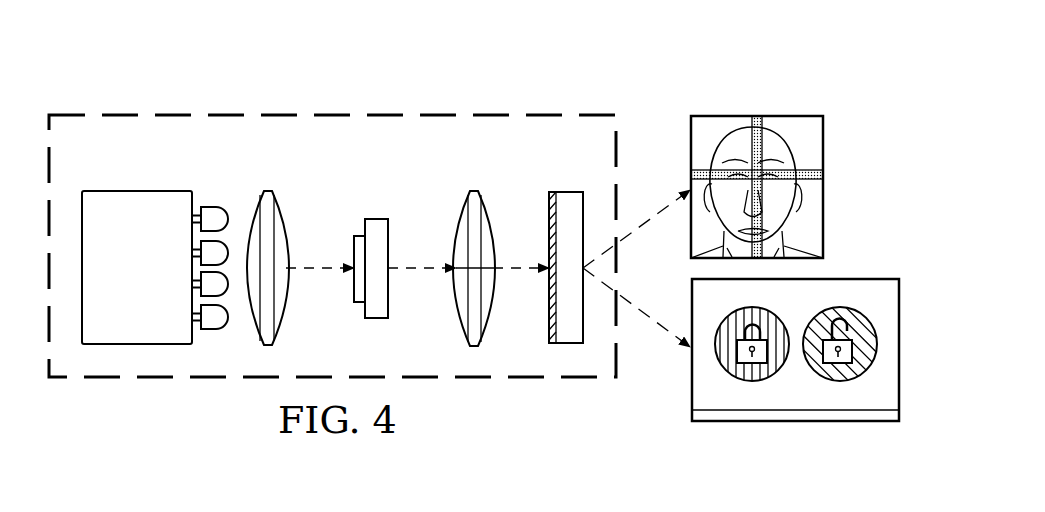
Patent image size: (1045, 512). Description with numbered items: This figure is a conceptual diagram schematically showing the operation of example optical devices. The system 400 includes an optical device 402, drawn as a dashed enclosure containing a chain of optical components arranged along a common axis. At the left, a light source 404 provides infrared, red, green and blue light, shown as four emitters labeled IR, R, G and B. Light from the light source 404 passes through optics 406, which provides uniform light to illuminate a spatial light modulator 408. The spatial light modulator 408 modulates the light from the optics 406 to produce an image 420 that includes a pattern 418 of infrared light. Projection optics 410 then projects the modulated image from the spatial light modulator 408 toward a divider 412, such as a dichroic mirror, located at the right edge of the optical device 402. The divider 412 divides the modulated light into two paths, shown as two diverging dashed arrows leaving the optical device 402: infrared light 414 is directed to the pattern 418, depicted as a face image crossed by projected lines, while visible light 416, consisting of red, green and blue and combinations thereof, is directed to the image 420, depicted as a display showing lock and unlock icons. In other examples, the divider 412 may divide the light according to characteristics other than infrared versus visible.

The system 400 is at (716, 70).
The optical device 402 is at (281, 113).
The light source 404 is at (137, 191).
The optics 406 is at (268, 191).
The spatial light modulator 408 is at (378, 219).
The projection optics 410 is at (475, 191).
The divider 412 is at (567, 192).
The infrared light 414 is at (653, 213).
The visible light 416 is at (653, 322).
The pattern 418 is at (825, 185).
The image 420 is at (793, 422).